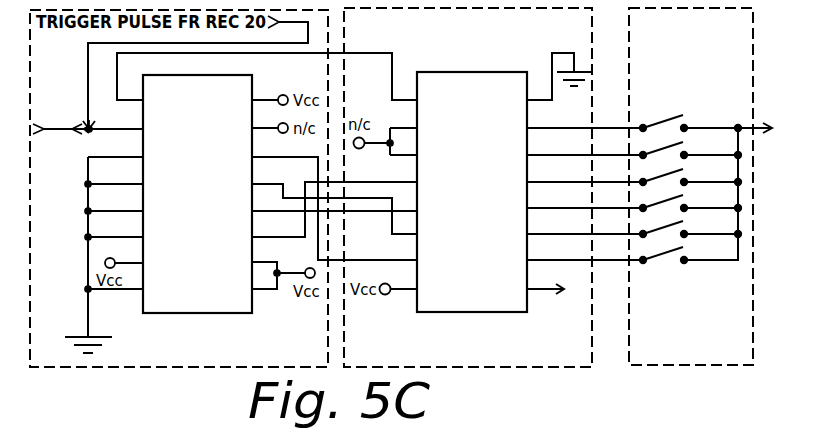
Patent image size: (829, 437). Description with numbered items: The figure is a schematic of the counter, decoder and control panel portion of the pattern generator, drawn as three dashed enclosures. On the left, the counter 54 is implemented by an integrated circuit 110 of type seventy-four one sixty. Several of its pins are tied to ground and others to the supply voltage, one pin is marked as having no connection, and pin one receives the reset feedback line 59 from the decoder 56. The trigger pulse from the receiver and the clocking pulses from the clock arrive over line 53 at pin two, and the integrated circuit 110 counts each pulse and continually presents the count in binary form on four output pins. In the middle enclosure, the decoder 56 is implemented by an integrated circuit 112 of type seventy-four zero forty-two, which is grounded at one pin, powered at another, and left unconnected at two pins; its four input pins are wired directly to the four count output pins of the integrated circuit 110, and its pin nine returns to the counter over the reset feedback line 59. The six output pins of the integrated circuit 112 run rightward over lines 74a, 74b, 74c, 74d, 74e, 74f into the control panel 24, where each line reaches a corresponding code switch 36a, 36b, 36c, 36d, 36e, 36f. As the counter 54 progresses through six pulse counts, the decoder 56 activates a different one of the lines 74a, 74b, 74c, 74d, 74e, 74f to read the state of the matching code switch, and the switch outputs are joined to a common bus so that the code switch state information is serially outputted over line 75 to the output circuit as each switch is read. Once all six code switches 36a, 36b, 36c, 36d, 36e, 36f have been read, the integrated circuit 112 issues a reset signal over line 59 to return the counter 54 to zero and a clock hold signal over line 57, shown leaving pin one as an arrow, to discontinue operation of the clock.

The line 53 is at (68, 125).
The reset feedback line 59 is at (336, 53).
The integrated circuit 110 is at (222, 313).
The integrated circuit 112 is at (500, 312).
The counter 54 is at (238, 367).
The decoder 56 is at (520, 367).
The control panel 24 is at (722, 365).
The line 57 is at (535, 291).
The line 75 is at (753, 118).
The line 74a is at (615, 260).
The line 74b is at (615, 234).
The line 74c is at (615, 208).
The line 74d is at (615, 182).
The line 74e is at (615, 155).
The line 74f is at (615, 128).
The code switch 36a is at (664, 243).
The code switch 36b is at (664, 217).
The code switch 36c is at (664, 191).
The code switch 36d is at (664, 165).
The code switch 36e is at (664, 138).
The code switch 36f is at (664, 111).